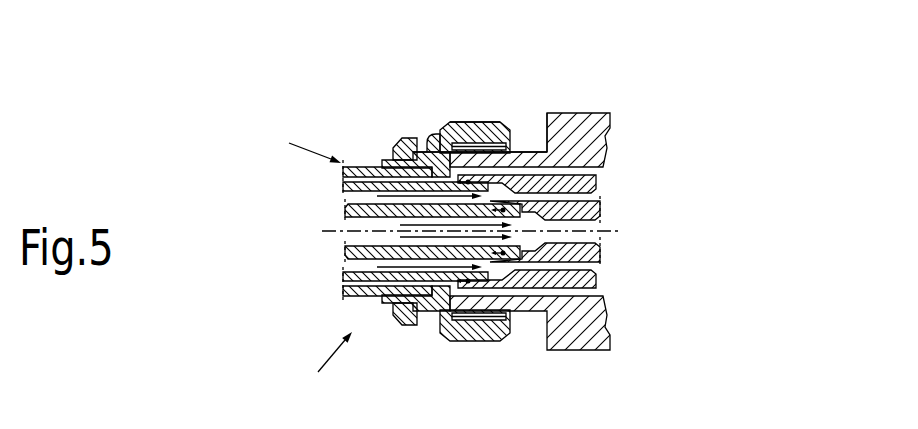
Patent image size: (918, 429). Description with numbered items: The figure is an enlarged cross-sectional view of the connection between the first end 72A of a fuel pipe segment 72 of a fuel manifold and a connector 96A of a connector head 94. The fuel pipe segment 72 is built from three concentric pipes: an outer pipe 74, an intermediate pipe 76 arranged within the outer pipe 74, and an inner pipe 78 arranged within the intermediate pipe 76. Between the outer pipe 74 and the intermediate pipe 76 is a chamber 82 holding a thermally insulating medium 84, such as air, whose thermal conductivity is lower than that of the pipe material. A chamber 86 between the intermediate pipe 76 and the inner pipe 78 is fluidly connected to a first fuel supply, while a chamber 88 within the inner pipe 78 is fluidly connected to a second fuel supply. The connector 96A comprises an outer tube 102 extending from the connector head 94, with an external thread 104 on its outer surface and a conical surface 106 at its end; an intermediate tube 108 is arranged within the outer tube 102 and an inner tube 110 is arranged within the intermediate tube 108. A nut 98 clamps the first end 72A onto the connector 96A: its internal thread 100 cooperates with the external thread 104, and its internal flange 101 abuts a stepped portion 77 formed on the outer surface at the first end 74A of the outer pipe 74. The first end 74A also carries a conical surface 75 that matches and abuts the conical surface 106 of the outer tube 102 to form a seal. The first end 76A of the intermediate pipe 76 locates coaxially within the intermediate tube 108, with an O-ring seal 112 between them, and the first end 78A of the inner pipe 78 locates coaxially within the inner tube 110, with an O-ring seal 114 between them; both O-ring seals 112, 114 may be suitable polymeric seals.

The fuel pipe segment 72 is at (299, 144).
The first end of fuel pipe segment 72A is at (319, 367).
The outer pipe 74 is at (343, 297).
The first end of outer pipe 74A is at (427, 150).
The conical surface 75 is at (437, 134).
The intermediate pipe 76 is at (343, 187).
The first end of intermediate pipe 76A is at (483, 278).
The stepped portion 77 is at (410, 312).
The inner pipe 78 is at (345, 251).
The first end of inner pipe 78A is at (600, 240).
The chamber 82 is at (343, 173).
The thermally insulating medium 84 is at (370, 176).
The chamber 86 is at (343, 290).
The chamber 88 is at (447, 231).
The connector head 94 is at (606, 118).
The connector 96A is at (608, 350).
The nut 98 is at (470, 140).
The internal thread 100 is at (480, 148).
The internal flange 101 is at (399, 139).
The outer tube 102 is at (523, 150).
The external thread 104 is at (499, 146).
The conical surface 106 is at (457, 158).
The intermediate tube 108 is at (600, 174).
The inner tube 110 is at (600, 207).
The O-ring seal 112 is at (467, 283).
The O-ring seal 114 is at (500, 257).